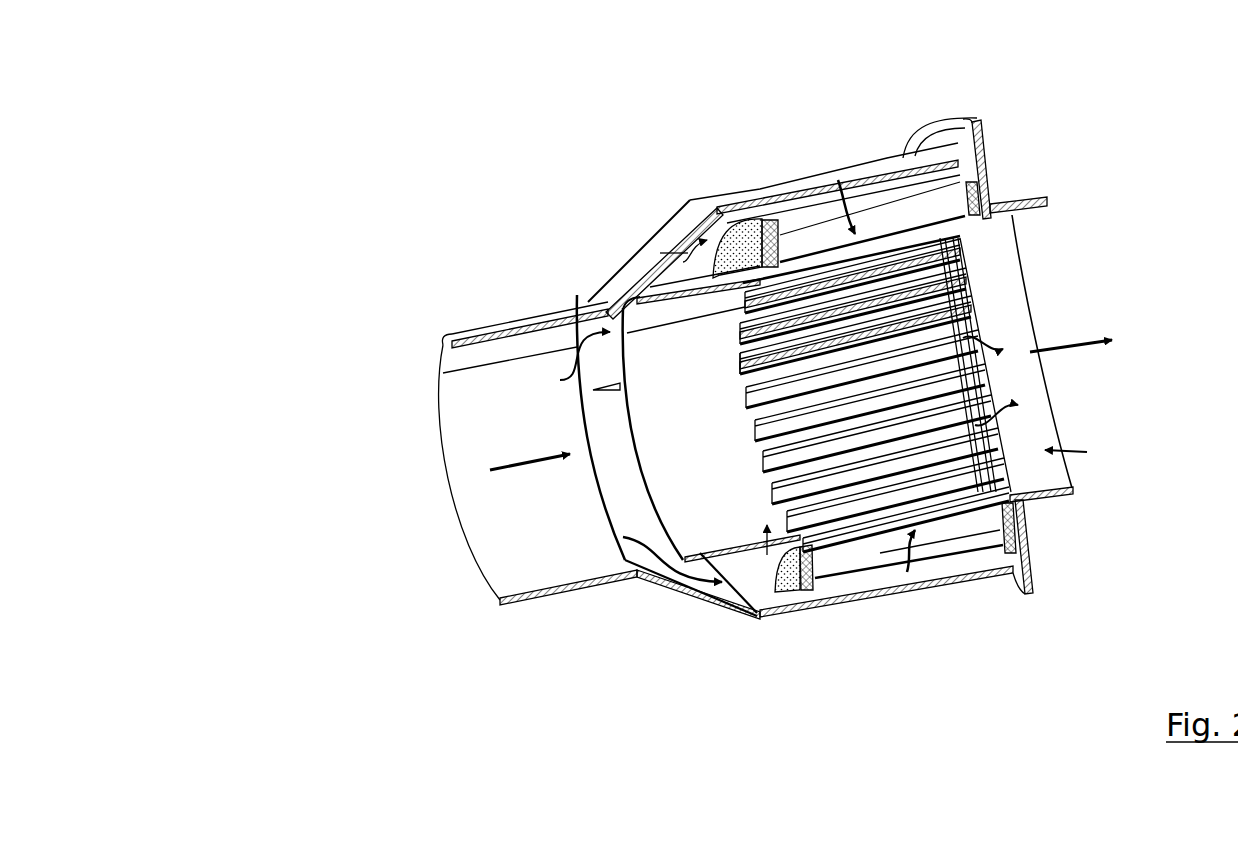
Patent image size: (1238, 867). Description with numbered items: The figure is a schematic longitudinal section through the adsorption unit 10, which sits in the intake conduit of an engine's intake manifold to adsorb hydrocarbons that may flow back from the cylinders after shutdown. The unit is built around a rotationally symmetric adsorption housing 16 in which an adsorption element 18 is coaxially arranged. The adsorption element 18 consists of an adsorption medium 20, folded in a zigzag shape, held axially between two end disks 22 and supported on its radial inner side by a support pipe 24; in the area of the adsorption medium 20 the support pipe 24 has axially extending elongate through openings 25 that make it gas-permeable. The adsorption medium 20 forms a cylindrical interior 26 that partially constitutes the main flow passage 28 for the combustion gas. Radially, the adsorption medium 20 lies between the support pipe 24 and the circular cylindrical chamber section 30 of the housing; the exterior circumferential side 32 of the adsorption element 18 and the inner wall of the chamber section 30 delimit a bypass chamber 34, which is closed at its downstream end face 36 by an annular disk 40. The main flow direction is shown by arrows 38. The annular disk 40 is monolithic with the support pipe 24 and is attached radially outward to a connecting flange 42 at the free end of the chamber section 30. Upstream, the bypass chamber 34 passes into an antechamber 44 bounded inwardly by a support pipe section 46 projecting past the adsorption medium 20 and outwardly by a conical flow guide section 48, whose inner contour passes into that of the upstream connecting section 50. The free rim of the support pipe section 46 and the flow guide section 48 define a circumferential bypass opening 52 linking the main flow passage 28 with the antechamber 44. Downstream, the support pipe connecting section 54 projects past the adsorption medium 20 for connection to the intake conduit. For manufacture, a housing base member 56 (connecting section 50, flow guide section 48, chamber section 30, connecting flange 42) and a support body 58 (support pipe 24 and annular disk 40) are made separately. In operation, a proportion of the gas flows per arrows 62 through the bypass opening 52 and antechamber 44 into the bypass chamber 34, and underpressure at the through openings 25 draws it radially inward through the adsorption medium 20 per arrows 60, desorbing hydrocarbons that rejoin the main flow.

The adsorption unit 10 is at (281, 114).
The adsorption housing 16 is at (702, 198).
The adsorption element 18 is at (835, 572).
The adsorption medium 20 is at (945, 548).
The end disks 22 is at (775, 545).
The support pipe 24 is at (767, 555).
The through openings 25 is at (757, 363).
The interior 26 is at (957, 302).
The main flow passage 28 is at (690, 443).
The chamber section 30 is at (762, 197).
The exterior circumferential side 32 is at (897, 175).
The bypass chamber 34 is at (940, 580).
The end face 36 is at (1030, 557).
The main flow direction 38 is at (510, 473).
The annular disk 40 is at (985, 152).
The connecting flange 42 is at (945, 127).
The antechamber 44 is at (660, 252).
The support pipe section 46 is at (733, 598).
The flow guide section 48 is at (620, 275).
The connecting section 50 is at (478, 328).
The bypass opening 52 is at (613, 478).
The support pipe connecting section 54 is at (1055, 468).
The housing base member 56 is at (572, 256).
The support body 58 is at (1087, 452).
The arrows 60 is at (838, 178).
The arrows 62 is at (700, 270).